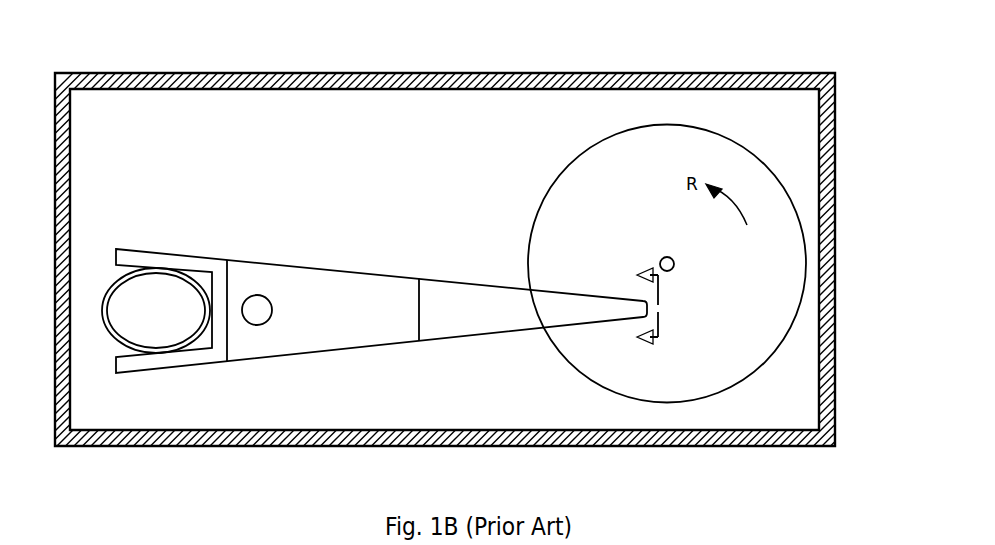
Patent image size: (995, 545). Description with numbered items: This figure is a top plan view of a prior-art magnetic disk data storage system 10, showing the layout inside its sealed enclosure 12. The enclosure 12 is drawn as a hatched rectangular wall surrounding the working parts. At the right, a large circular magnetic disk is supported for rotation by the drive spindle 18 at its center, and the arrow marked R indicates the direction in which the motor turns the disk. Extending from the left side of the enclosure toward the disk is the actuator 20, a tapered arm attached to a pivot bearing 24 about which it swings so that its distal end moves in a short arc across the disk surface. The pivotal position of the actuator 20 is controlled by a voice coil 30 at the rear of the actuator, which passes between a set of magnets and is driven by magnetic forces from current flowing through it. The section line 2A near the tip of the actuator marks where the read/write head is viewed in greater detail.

The magnetic disk data storage system 10 is at (816, 38).
The sealed enclosure 12 is at (560, 72).
The drive spindle 18 is at (672, 257).
The actuator 20 is at (265, 262).
The pivot bearing 24 is at (272, 308).
The voice coil 30 is at (105, 291).
The section line 2A is at (632, 308).